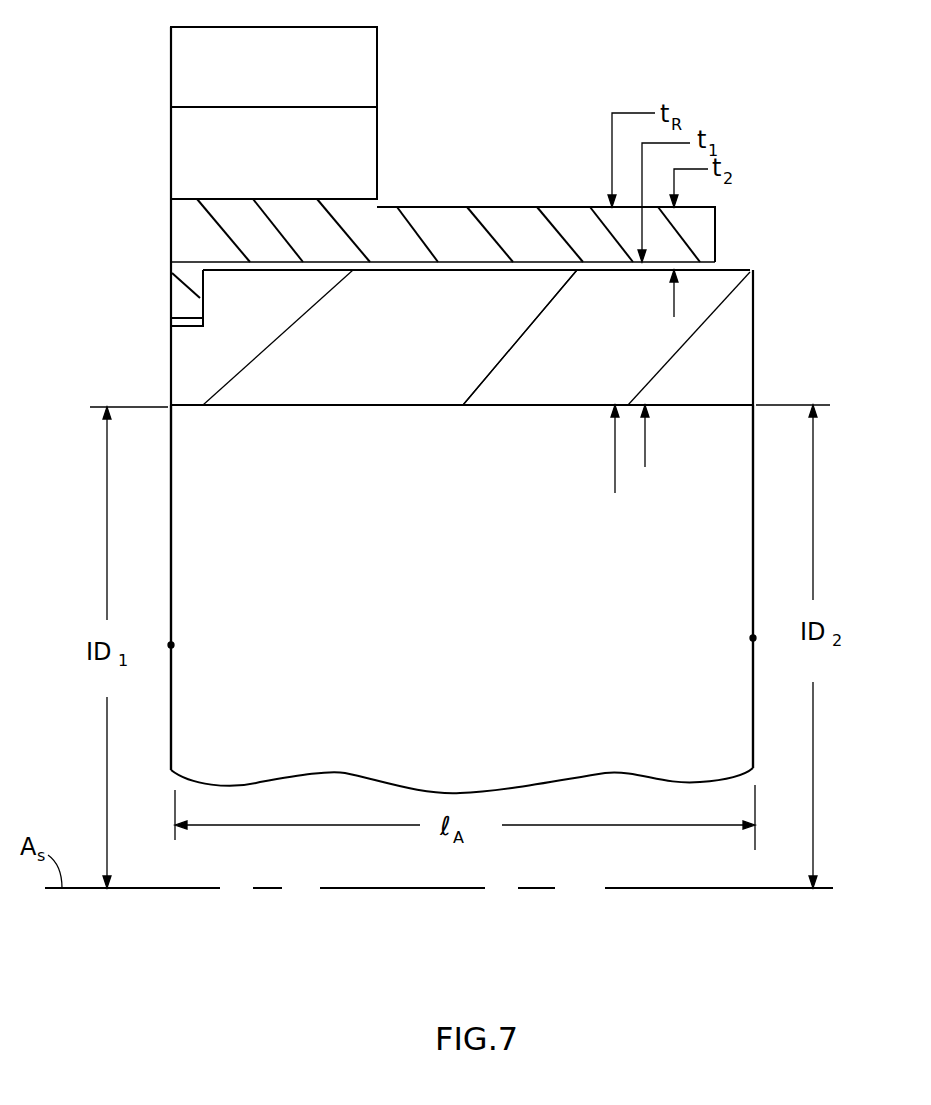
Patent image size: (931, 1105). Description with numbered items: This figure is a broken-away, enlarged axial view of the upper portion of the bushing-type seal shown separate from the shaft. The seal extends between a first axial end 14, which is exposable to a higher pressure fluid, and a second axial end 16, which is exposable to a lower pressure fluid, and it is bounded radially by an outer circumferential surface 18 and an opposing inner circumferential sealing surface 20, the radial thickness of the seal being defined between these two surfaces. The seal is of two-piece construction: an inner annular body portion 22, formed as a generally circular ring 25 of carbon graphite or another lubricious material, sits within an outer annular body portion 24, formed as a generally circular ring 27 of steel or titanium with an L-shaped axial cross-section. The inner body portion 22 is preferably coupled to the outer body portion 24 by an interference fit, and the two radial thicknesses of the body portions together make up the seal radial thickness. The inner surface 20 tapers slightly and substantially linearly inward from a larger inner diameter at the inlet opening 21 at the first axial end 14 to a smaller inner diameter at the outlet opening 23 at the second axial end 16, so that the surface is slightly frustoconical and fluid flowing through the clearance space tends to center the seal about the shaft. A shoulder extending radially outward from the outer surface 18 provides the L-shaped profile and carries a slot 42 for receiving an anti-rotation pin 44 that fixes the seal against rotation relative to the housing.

The slot 42 is at (378, 47).
The anti-rotation pin 44 is at (330, 198).
The outer annular body portion 24 is at (442, 196).
The outer circumferential surface 18 is at (518, 196).
The circular ring 27 is at (186, 222).
The first axial end 14 is at (170, 300).
The second axial end 16 is at (757, 318).
The inner annular body portion 22 is at (328, 410).
The circular ring 25 is at (395, 387).
The inner circumferential sealing surface 20 is at (456, 420).
The inlet opening 21 is at (171, 645).
The outlet opening 23 is at (753, 638).